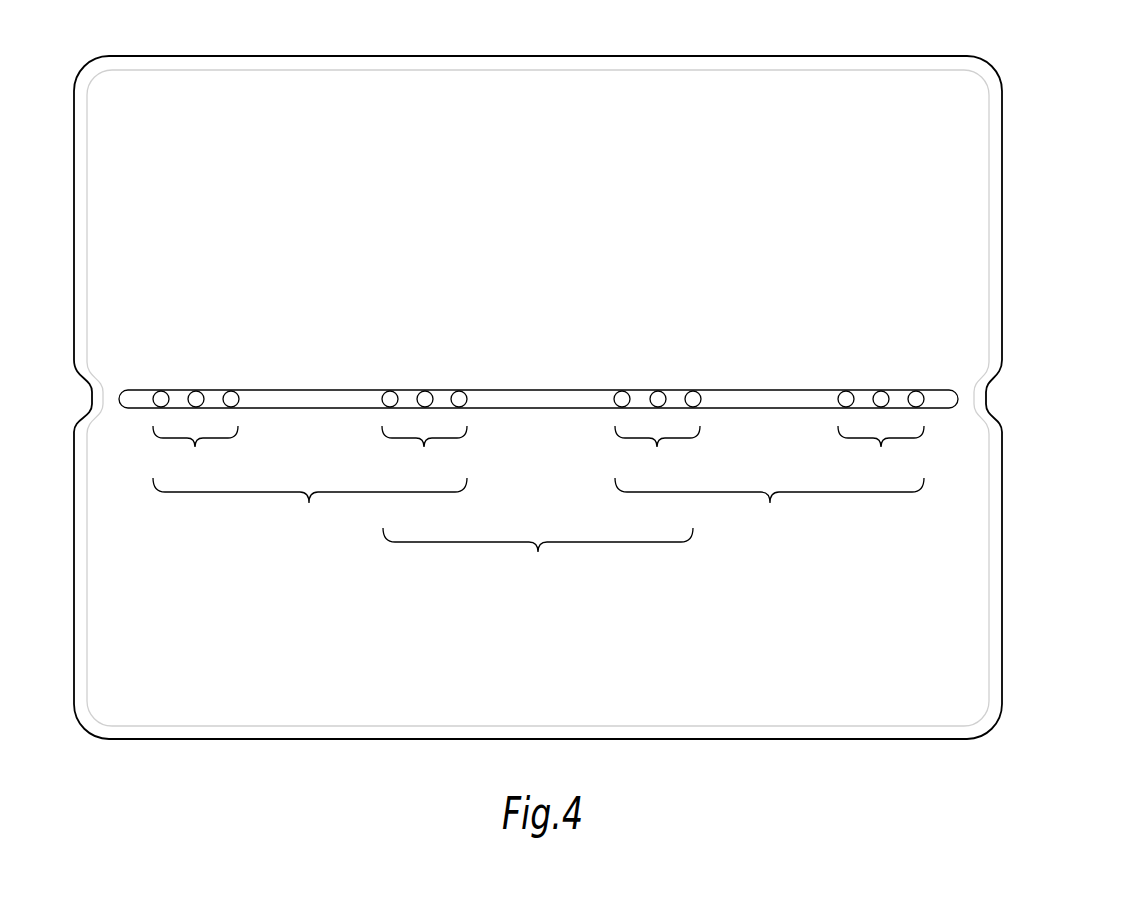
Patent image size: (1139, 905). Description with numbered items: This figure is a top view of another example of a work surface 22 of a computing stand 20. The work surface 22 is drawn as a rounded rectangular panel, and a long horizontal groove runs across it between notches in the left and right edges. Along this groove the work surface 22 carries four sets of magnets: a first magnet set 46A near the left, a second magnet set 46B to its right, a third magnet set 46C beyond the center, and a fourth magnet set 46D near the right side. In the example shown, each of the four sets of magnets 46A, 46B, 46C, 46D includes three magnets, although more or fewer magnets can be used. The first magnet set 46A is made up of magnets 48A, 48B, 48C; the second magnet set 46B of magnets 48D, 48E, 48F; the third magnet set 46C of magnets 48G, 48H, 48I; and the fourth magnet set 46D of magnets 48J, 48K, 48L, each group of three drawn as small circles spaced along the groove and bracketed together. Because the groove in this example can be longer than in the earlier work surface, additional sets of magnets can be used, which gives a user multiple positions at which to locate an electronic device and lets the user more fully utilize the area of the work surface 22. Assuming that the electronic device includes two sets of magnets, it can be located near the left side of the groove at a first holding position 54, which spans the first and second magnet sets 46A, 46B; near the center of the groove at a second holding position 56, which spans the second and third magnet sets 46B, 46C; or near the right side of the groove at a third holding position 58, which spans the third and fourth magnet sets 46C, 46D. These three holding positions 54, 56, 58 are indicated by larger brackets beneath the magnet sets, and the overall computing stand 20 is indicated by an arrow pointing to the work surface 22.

The computing stand 20 is at (1088, 61).
The work surface 22 is at (967, 178).
The first magnet set 46A is at (195, 452).
The second magnet set 46B is at (424, 452).
The third magnet set 46C is at (657, 452).
The fourth magnet set 46D is at (881, 452).
The magnet 48A is at (161, 391).
The magnet 48B is at (196, 391).
The magnet 48C is at (231, 391).
The magnet 48D is at (390, 391).
The magnet 48E is at (425, 391).
The magnet 48F is at (459, 391).
The magnet 48G is at (622, 391).
The magnet 48H is at (658, 391).
The magnet 48I is at (693, 391).
The magnet 48J is at (846, 391).
The magnet 48K is at (881, 391).
The magnet 48L is at (916, 391).
The first holding position 54 is at (310, 506).
The second holding position 56 is at (538, 556).
The third holding position 58 is at (769, 506).